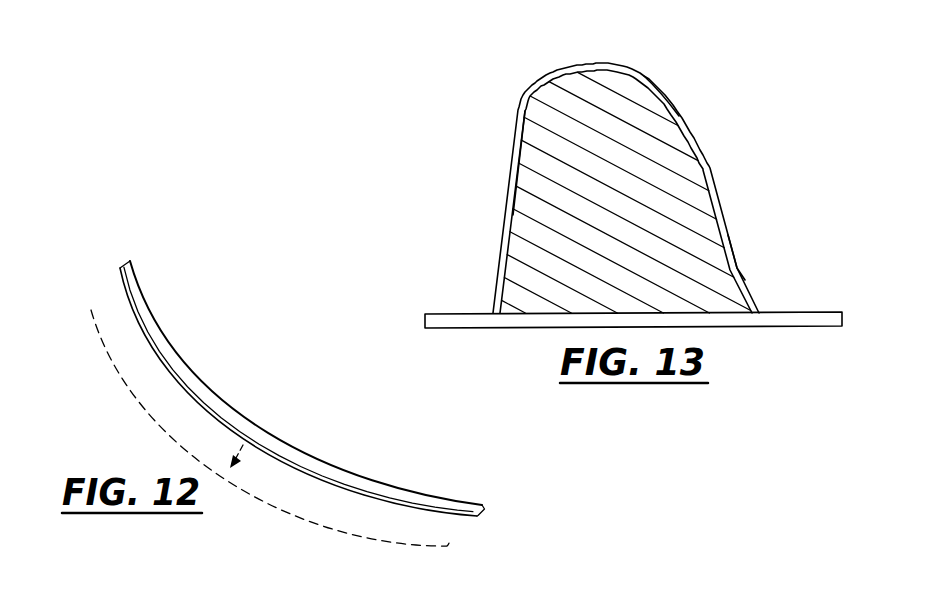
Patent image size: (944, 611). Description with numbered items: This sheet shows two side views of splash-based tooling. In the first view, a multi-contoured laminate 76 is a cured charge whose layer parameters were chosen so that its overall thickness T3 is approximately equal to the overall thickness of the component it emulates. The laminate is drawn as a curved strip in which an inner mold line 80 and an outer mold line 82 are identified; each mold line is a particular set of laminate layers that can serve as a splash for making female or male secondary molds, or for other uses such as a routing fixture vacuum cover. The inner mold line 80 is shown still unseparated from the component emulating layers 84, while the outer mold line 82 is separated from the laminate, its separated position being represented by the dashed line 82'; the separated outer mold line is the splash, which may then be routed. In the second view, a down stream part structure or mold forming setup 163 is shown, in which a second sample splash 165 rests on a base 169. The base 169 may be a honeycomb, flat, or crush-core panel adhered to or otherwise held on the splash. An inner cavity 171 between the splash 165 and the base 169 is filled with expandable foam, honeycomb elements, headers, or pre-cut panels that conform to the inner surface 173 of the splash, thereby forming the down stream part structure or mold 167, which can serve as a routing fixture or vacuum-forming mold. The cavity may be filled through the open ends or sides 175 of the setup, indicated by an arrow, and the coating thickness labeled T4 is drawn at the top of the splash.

In FIG. 12, the multi-contoured laminate 76 is at (265, 362).
In FIG. 12, the inner mold line 80 is at (213, 392).
In FIG. 12, the outer mold line 82 is at (298, 391).
In FIG. 12, the dashed line 82' is at (270, 434).
In FIG. 12, the component emulating layers 84 is at (126, 263).
In FIG. 12, the overall thickness T3 is at (410, 538).
In FIG. 13, the down stream part structure or mold forming setup 163 is at (634, 178).
In FIG. 13, the splash 165 is at (713, 181).
In FIG. 13, the down stream part structure or mold 167 is at (681, 118).
In FIG. 13, the base 169 is at (807, 313).
In FIG. 13, the inner cavity 171 is at (706, 235).
In FIG. 13, the inner surface 173 is at (731, 268).
In FIG. 13, the open ends or sides 175 is at (528, 204).
In FIG. 13, the coating thickness T4 is at (607, 90).